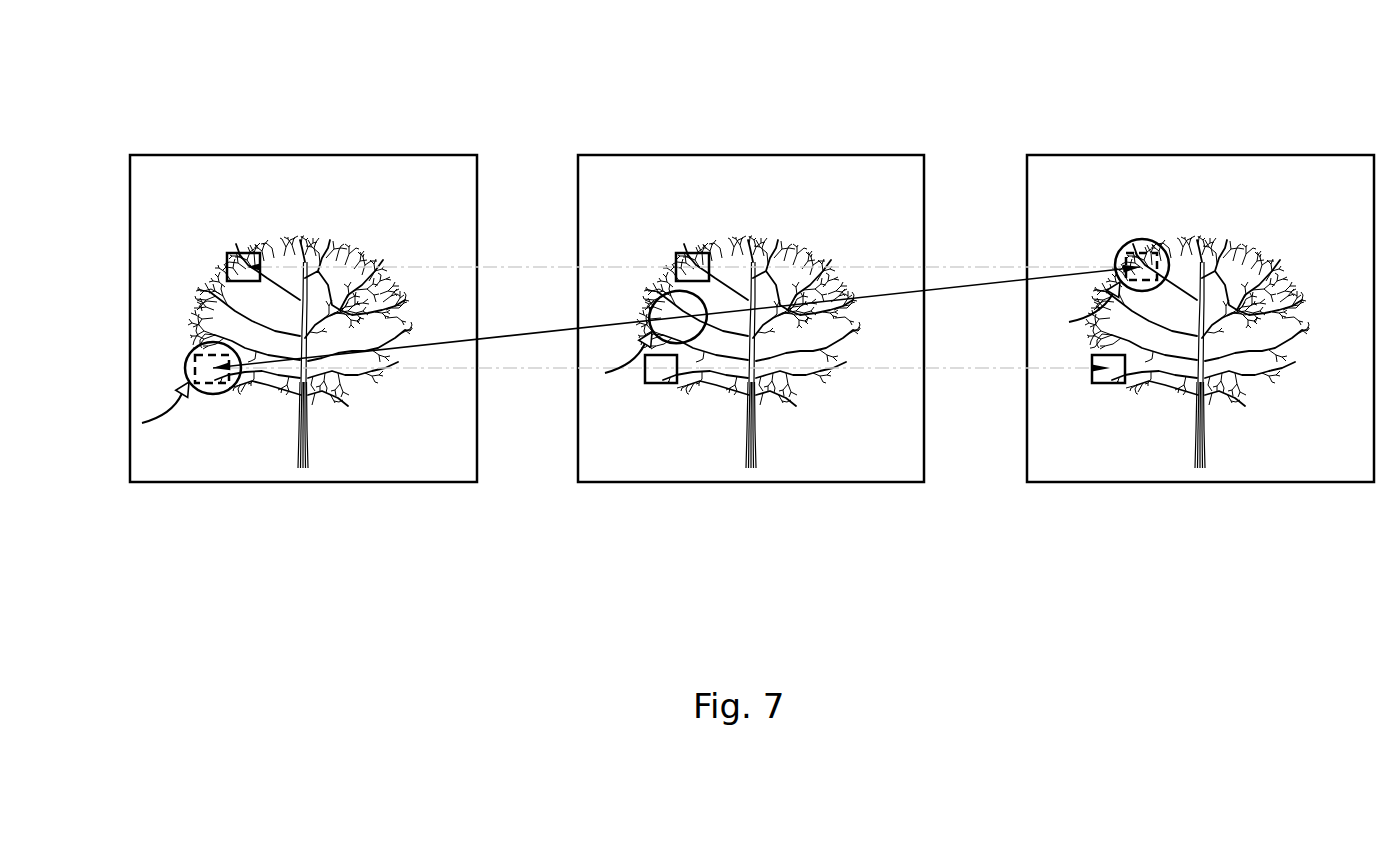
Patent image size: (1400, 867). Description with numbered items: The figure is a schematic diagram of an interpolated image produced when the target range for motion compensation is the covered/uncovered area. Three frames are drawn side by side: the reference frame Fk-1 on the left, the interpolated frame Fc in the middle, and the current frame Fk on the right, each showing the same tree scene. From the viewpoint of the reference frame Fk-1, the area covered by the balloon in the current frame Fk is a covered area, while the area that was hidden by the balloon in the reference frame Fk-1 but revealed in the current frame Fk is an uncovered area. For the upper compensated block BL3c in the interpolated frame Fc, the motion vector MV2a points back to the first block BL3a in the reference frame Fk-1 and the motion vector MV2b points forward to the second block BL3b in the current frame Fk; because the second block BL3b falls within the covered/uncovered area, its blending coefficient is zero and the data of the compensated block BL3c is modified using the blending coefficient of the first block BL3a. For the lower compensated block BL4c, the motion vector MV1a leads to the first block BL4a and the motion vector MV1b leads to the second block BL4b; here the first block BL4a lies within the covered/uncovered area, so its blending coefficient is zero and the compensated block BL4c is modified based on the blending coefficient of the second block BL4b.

The reference frame Fk-1 is at (302, 155).
The interpolated frame Fc is at (752, 155).
The current frame Fk is at (1200, 155).
The first block BL3a is at (230, 253).
The first block BL4a is at (197, 393).
The compensated block BL3c is at (678, 253).
The compensated block BL4c is at (648, 384).
The second block BL3b is at (1128, 240).
The second block BL4b is at (1097, 384).
The motion vector MV2a is at (534, 265).
The motion vector MV2b is at (965, 265).
The motion vector MV1a is at (534, 371).
The motion vector MV1b is at (965, 371).